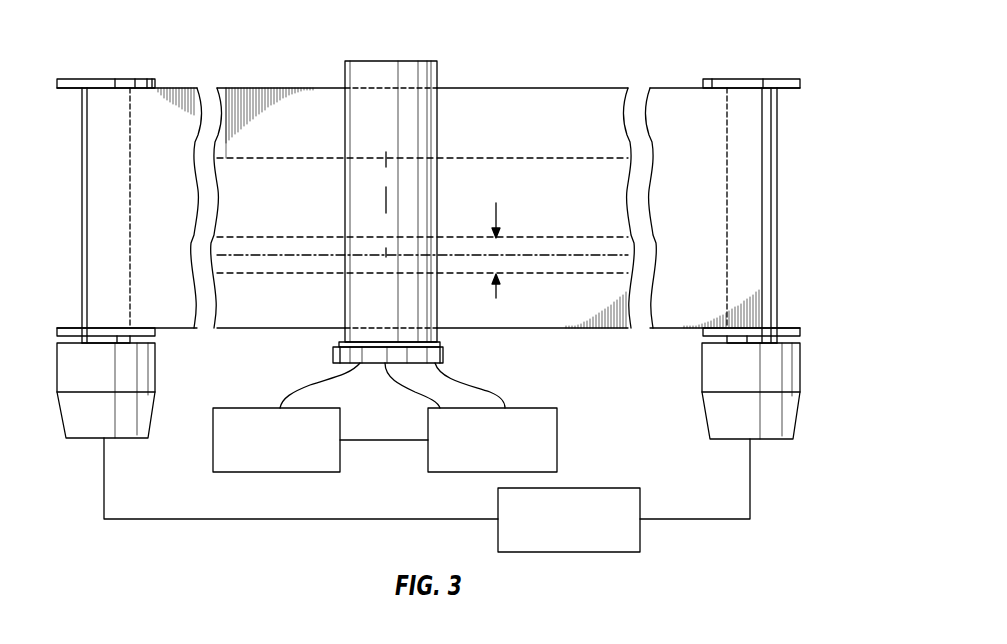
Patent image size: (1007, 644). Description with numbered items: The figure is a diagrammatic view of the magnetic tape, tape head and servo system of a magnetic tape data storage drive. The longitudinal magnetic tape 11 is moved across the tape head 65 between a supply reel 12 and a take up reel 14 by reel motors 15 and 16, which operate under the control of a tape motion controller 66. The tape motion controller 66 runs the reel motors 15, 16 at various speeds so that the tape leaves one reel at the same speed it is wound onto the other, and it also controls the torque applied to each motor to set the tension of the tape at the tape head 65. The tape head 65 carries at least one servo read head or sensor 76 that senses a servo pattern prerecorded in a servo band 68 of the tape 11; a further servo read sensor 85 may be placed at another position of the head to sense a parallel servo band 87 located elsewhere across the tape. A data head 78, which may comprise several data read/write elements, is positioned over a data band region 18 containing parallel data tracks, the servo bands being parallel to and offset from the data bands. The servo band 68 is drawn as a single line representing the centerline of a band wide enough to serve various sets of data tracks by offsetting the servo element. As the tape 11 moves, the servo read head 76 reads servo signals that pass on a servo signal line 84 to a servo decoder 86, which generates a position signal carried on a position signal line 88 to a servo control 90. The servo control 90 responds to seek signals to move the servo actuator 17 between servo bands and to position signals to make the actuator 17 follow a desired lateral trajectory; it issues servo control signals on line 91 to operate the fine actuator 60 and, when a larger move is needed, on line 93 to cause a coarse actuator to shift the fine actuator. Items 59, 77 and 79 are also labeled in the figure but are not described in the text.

The magnetic tape 11 is at (262, 88).
The supply reel 12 is at (88, 79).
The take up reel 14 is at (743, 79).
The reel motor 15 is at (92, 440).
The reel motor 16 is at (756, 440).
The servo actuator 17 is at (374, 374).
The data band region 18 is at (455, 194).
The fine actuator 59 is at (443, 359).
The fine actuator 60 is at (443, 351).
The tape head 65 is at (339, 343).
The tape motion controller 66 is at (640, 532).
The servo band 68 is at (582, 258).
The servo read head 76 is at (386, 260).
The direction of lateral tape motion 77 is at (498, 206).
The data head 78 is at (386, 203).
The direction of lateral tape motion 79 is at (498, 294).
The servo signal line 84 is at (300, 388).
The servo read sensor 85 is at (386, 154).
The servo decoder 86 is at (213, 450).
The servo band 87 is at (535, 158).
The position signal line 88 is at (385, 441).
The servo control 90 is at (557, 440).
The servo control signal line 91 is at (415, 392).
The servo control signal line 93 is at (506, 395).